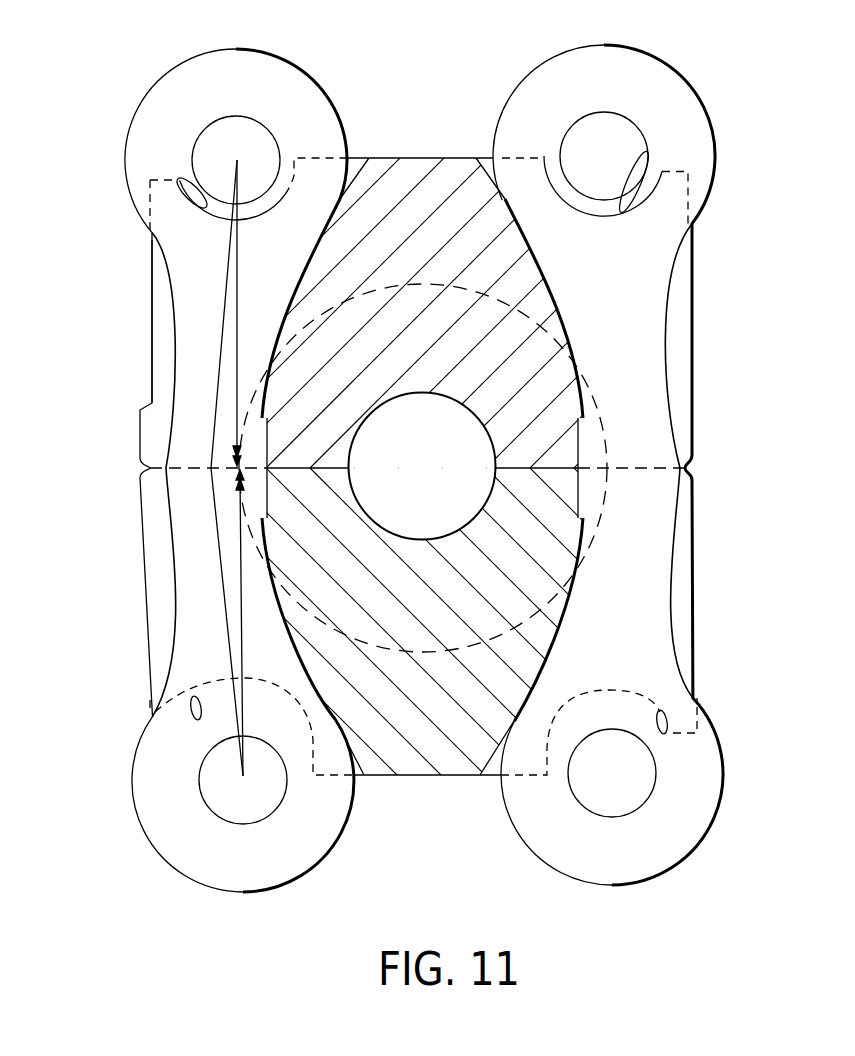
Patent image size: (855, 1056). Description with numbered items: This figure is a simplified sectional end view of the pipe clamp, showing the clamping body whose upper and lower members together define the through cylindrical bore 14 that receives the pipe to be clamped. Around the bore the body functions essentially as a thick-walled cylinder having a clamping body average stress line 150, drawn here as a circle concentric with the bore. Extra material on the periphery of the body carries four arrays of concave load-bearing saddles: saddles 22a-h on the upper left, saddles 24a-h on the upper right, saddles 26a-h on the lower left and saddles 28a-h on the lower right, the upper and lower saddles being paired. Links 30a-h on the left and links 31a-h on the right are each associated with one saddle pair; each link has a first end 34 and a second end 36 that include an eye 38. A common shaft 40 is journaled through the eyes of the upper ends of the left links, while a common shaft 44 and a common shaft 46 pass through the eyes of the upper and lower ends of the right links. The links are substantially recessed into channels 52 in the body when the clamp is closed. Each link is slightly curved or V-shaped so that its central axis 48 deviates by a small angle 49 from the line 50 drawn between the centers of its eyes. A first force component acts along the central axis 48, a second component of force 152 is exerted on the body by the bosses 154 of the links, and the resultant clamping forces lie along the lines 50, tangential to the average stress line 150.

The through cylindrical bore 14 is at (467, 463).
The clamping body average stress line 150 is at (403, 283).
The first end of link 34 is at (278, 78).
The second end of link 36 is at (225, 880).
The eye 38 is at (214, 121).
The common shaft 40 is at (248, 152).
The common shaft 44 is at (593, 140).
The common shaft 46 is at (632, 800).
The saddles 22a-h is at (205, 205).
The saddles 24a-h is at (625, 193).
The saddles 26a-h is at (193, 703).
The saddles 28a-h is at (660, 720).
The links 30a-h is at (185, 545).
The links 31a-h is at (655, 503).
The central axis of link 48 is at (213, 399).
The small angle 49 is at (238, 697).
The line between centers of link eyes 50 is at (237, 368).
The channels 52 is at (152, 313).
The second component of force 152 is at (222, 464).
The bosses 154 is at (266, 487).